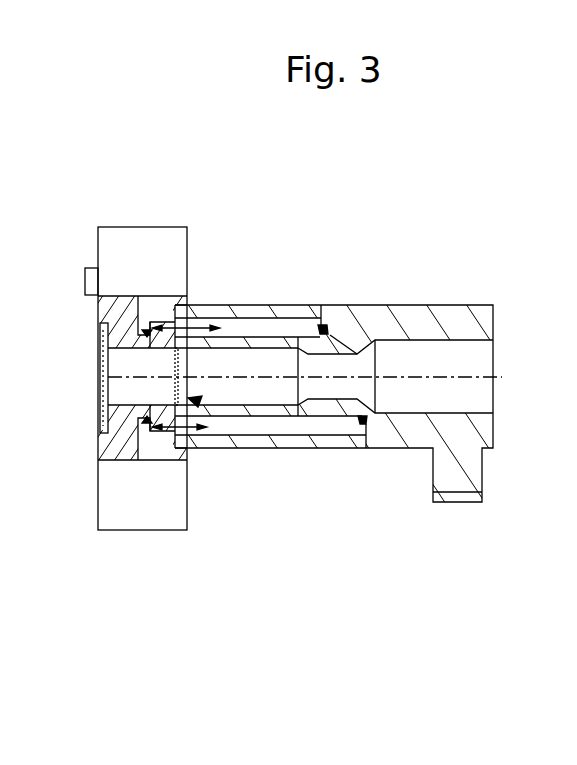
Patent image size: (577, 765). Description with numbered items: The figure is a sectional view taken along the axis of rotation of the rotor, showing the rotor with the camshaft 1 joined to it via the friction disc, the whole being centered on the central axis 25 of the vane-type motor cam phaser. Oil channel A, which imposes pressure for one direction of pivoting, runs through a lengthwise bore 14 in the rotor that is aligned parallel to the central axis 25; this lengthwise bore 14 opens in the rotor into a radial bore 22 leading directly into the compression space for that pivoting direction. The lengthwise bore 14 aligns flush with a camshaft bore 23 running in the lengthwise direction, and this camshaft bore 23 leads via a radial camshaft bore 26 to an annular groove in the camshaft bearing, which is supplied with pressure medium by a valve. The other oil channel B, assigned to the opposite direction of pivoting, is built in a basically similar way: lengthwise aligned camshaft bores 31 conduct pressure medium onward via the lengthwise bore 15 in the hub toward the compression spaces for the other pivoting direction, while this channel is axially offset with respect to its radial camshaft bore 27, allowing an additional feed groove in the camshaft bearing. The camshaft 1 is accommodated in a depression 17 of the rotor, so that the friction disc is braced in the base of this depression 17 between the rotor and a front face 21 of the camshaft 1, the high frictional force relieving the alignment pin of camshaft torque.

The camshaft 1 is at (394, 318).
The lengthwise bore 14 is at (171, 320).
The lengthwise bore 15 is at (165, 433).
The depression 17 is at (160, 394).
The front face 21 is at (134, 432).
The radial bore 22 is at (142, 336).
The camshaft bore 23 is at (268, 322).
The central axis 25 is at (97, 378).
The radial camshaft bore 26 is at (323, 318).
The radial camshaft bore 27 is at (362, 425).
The camshaft bores 31 is at (303, 425).